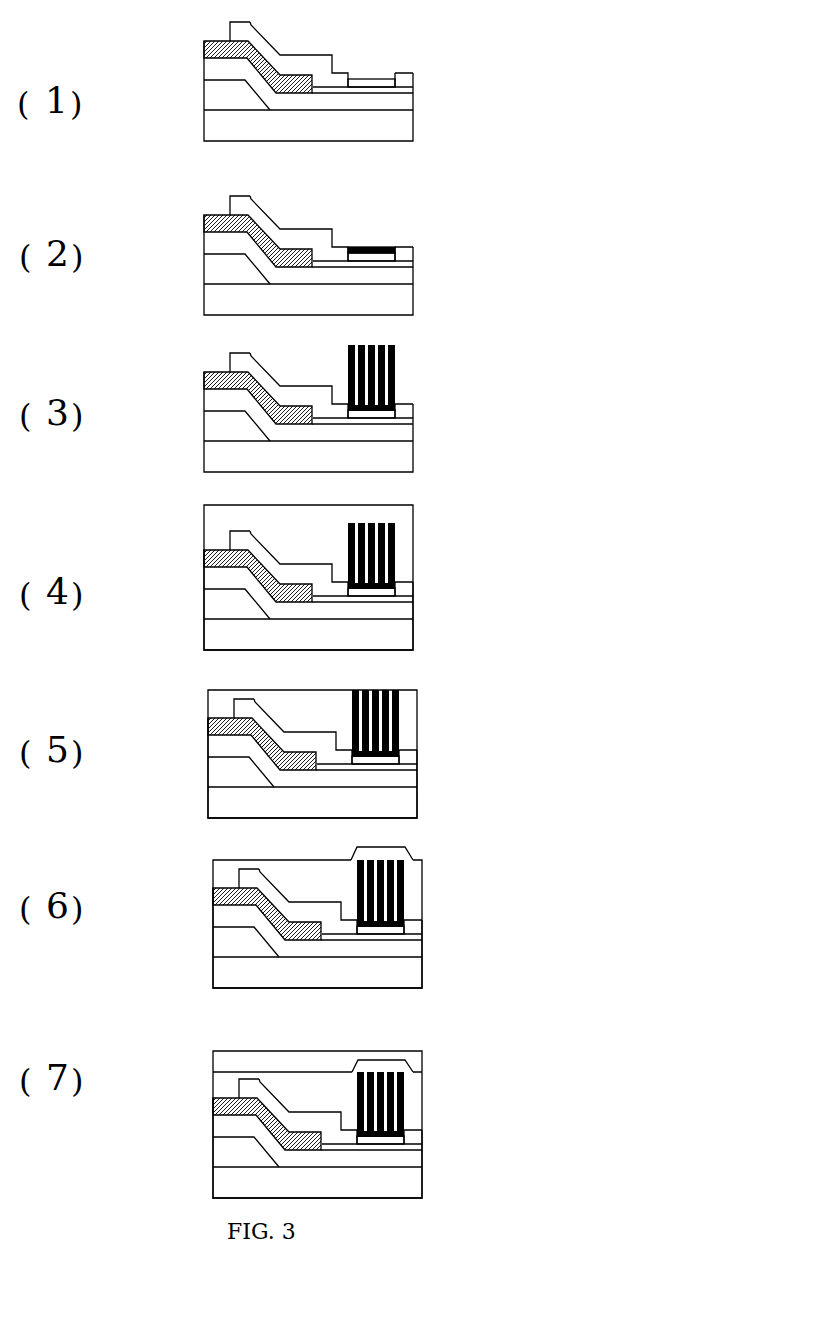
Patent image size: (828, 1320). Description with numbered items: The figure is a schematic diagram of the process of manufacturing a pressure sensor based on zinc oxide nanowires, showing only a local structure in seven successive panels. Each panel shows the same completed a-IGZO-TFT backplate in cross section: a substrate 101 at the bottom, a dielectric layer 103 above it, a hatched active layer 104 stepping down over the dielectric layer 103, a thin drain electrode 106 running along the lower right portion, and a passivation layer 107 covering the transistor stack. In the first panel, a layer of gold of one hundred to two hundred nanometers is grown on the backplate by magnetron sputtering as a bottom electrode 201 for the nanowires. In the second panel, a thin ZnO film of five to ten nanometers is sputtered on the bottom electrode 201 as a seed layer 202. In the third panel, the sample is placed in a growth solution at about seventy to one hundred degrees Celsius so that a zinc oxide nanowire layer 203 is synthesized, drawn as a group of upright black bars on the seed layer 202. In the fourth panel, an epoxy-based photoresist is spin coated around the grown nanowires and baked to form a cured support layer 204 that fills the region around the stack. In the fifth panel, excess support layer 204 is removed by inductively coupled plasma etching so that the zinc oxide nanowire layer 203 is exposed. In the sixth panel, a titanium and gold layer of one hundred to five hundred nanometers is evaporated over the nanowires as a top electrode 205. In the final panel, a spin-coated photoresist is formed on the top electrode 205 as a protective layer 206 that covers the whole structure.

The substrate 101 is at (270, 127).
The dielectric layer 103 is at (397, 101).
The active layer 104 is at (228, 51).
The drain electrode 106 is at (407, 90).
The passivation layer 107 is at (242, 28).
The bottom electrode 201 is at (369, 82).
The seed layer 202 is at (380, 246).
The zinc oxide nanowire layer 203 is at (395, 383).
The support layer 204 is at (398, 515).
The top electrode 205 is at (373, 852).
The protective layer 206 is at (338, 1057).